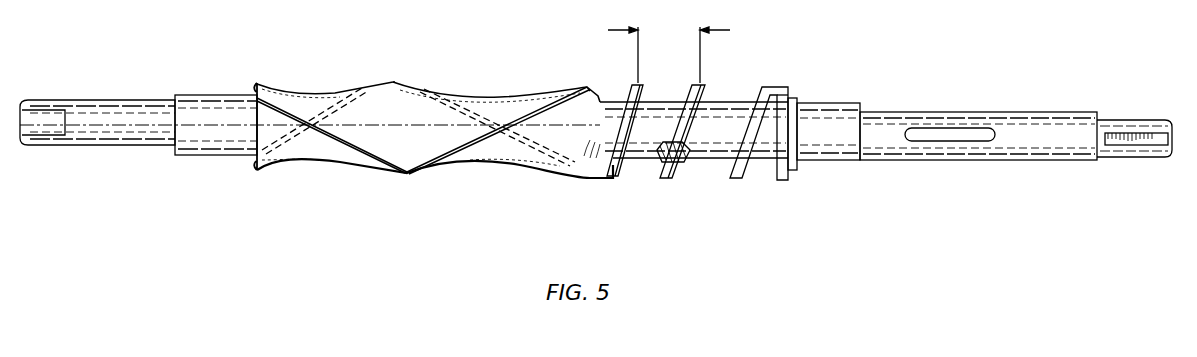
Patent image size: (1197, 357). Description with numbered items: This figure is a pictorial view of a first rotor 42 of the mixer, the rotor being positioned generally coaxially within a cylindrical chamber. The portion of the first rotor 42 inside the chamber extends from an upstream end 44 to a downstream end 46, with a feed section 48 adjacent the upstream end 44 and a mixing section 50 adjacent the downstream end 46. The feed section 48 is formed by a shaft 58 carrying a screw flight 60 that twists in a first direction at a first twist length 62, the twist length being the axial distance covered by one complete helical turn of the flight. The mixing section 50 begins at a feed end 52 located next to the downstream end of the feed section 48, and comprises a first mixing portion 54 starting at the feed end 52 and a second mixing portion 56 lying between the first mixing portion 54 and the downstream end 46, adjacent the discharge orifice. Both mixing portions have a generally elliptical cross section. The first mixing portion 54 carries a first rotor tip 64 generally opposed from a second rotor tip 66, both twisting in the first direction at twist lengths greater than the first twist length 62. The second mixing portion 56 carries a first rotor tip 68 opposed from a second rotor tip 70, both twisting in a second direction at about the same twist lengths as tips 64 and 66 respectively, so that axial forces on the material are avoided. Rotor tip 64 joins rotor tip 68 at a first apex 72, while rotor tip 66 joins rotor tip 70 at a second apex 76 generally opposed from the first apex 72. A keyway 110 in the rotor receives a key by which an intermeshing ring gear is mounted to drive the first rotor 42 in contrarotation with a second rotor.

The first rotor 42 is at (980, 145).
The upstream end 44 is at (783, 181).
The downstream end 46 is at (260, 169).
The feed section 48 is at (656, 169).
The mixing section 50 is at (440, 144).
The feed end 52 is at (603, 98).
The first mixing portion 54 is at (540, 96).
The second mixing portion 56 is at (315, 90).
The shaft 58 is at (736, 100).
The screw flight 60 is at (698, 90).
The first twist length 62 is at (669, 52).
The first rotor tip 64 is at (467, 160).
The second rotor tip 66 is at (462, 97).
The first rotor tip 68 is at (347, 155).
The second rotor tip 70 is at (333, 93).
The first apex 72 is at (407, 174).
The second apex 76 is at (395, 82).
The keyway 110 is at (950, 135).